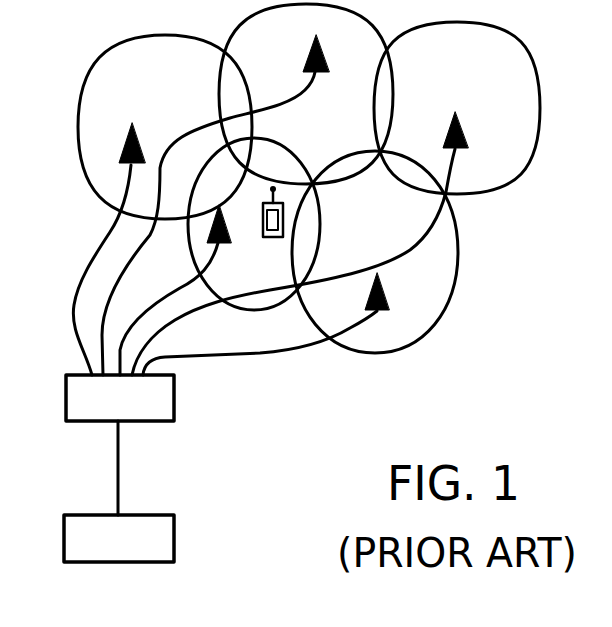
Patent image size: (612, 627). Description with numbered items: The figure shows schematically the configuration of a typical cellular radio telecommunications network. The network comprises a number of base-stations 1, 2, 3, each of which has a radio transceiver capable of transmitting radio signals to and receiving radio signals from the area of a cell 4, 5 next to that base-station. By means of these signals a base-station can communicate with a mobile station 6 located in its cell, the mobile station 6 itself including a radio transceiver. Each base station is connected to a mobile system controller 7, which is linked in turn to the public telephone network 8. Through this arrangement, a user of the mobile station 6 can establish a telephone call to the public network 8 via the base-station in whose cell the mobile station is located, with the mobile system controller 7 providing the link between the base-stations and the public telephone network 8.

The base-station 1 is at (125, 143).
The base-station 2 is at (306, 58).
The base-station 3 is at (226, 222).
The cell 4 is at (105, 195).
The cell 5 is at (193, 223).
The mobile station 6 is at (270, 240).
The mobile system controller 7 is at (65, 404).
The public telephone network 8 is at (63, 541).